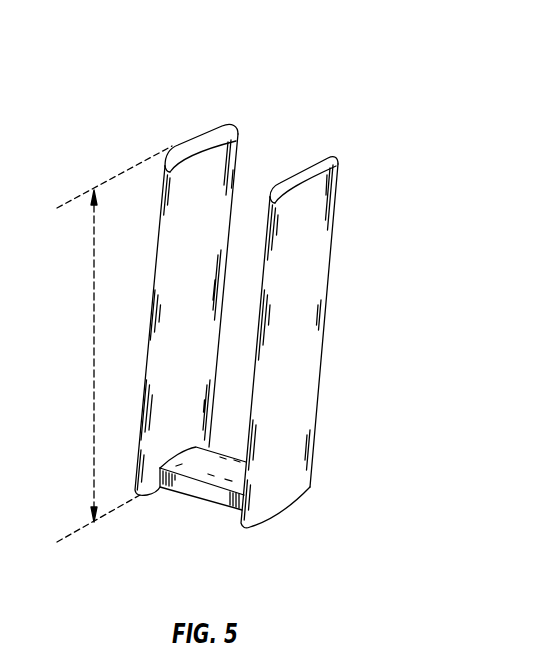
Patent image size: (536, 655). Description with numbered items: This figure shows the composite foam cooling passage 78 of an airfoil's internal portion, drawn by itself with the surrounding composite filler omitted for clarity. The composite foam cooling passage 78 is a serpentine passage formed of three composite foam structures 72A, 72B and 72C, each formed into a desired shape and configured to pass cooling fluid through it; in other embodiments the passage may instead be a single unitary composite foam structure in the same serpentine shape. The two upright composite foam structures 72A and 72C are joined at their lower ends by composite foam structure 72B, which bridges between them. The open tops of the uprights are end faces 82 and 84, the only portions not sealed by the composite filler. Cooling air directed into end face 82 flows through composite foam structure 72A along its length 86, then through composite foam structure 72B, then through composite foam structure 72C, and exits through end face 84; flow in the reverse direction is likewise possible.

The composite foam cooling passage 78 is at (375, 57).
The composite foam structure 72A is at (235, 178).
The composite foam structure 72B is at (200, 500).
The composite foam structure 72C is at (327, 307).
The end face 82 is at (218, 132).
The end face 84 is at (313, 163).
The length 86 is at (94, 352).